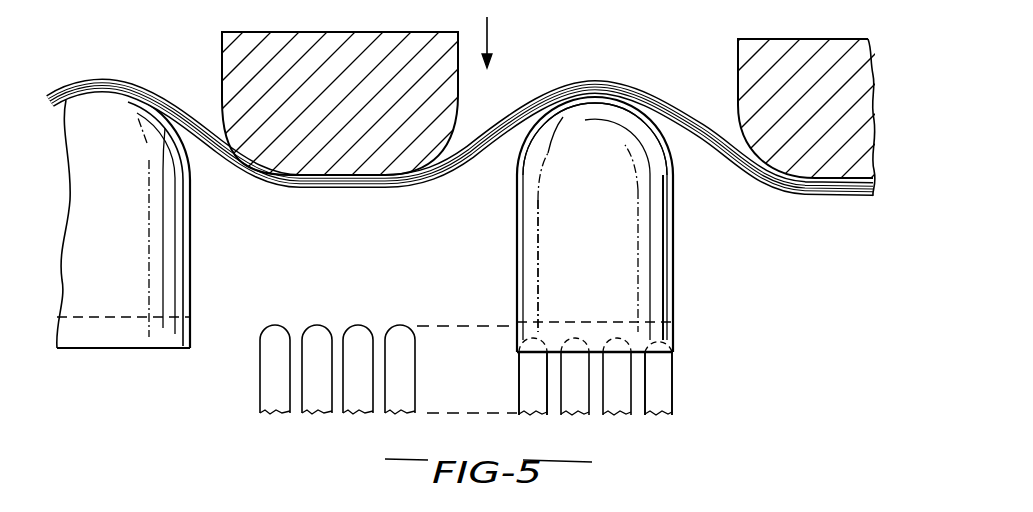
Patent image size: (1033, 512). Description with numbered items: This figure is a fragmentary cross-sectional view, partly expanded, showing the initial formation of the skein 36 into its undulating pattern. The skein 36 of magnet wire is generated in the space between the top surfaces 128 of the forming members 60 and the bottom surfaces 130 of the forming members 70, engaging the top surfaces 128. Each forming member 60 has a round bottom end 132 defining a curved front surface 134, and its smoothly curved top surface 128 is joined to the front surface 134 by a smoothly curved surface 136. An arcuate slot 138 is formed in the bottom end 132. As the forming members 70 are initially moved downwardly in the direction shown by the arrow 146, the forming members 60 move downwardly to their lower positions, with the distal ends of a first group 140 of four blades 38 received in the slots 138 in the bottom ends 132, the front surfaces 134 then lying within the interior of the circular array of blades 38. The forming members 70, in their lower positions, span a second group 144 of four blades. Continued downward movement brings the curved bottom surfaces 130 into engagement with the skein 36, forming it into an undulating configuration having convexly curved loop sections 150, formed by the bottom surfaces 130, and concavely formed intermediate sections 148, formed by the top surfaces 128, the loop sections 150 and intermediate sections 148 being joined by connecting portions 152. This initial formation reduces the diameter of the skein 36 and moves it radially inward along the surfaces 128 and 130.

The skein 36 is at (668, 75).
The blades 38 is at (527, 372).
The forming members 60 is at (170, 241).
The forming members 70 is at (255, 58).
The top surface 128 is at (592, 98).
The bottom surface 130 is at (250, 165).
The round bottom end 132 is at (660, 381).
The curved front surface 134 is at (627, 298).
The smoothly curved surface 136 is at (572, 221).
The arcuate slot 138 is at (662, 342).
The first group of blades 140 is at (680, 420).
The second group of blades 144 is at (420, 415).
The arrow 146 is at (488, 28).
The intermediate sections 148 is at (113, 80).
The loop sections 150 is at (338, 186).
The connecting portions 152 is at (204, 128).